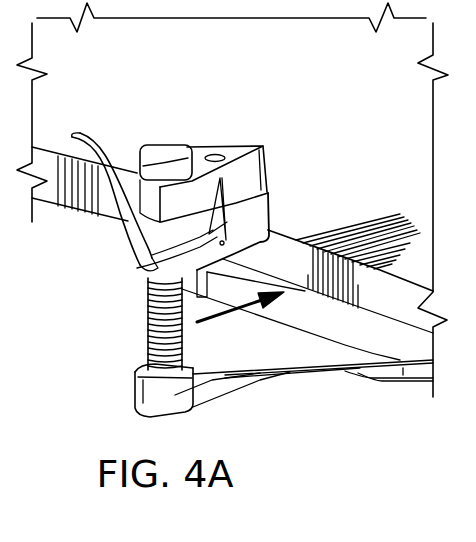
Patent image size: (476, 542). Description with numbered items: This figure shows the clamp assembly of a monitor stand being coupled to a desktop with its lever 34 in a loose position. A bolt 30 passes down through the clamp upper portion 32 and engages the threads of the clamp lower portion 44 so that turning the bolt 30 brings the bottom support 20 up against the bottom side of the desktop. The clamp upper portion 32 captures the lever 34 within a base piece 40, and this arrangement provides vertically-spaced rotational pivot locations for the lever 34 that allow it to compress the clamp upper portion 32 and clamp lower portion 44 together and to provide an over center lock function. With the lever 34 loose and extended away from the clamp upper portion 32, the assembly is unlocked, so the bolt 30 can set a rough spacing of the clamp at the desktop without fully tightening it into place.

The bottom support 20 is at (287, 357).
The bolt 30 is at (164, 144).
The clamp upper portion 32 is at (272, 163).
The lever 34 is at (124, 237).
The base piece 40 is at (272, 215).
The clamp lower portion 44 is at (133, 387).